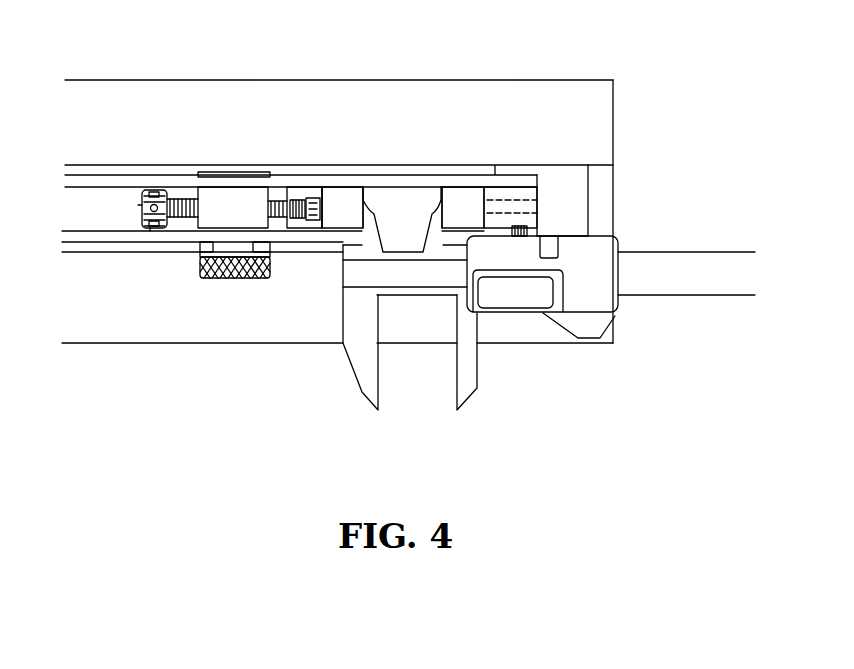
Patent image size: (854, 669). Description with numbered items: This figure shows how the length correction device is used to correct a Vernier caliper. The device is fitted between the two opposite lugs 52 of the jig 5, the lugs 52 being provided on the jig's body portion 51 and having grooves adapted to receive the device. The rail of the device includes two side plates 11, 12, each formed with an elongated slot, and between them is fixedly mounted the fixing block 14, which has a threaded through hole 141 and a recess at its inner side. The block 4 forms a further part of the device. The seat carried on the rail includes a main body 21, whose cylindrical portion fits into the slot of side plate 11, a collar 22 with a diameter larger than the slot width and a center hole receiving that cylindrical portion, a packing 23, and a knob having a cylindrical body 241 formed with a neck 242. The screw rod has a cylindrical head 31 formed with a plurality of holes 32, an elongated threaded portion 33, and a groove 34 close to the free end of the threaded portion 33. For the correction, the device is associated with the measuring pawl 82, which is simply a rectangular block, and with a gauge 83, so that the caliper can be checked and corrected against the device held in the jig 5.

The block 4 is at (298, 197).
The jig 5 is at (627, 82).
The side plate 11 is at (85, 182).
The side plate 12 is at (158, 232).
The fixing block 14 is at (520, 193).
The main body 21 is at (253, 172).
The collar 22 is at (227, 200).
The packing 23 is at (197, 250).
The cylindrical head 31 is at (140, 195).
The holes 32 is at (142, 212).
The elongated threaded portion 33 is at (183, 198).
The groove 34 is at (307, 200).
The body portion 51 is at (575, 100).
The lugs 52 is at (563, 178).
The measuring pawl 82 is at (333, 197).
The gauge 83 is at (423, 198).
The threaded through hole 141 is at (568, 202).
The cylindrical body 241 is at (242, 278).
The neck 242 is at (267, 252).